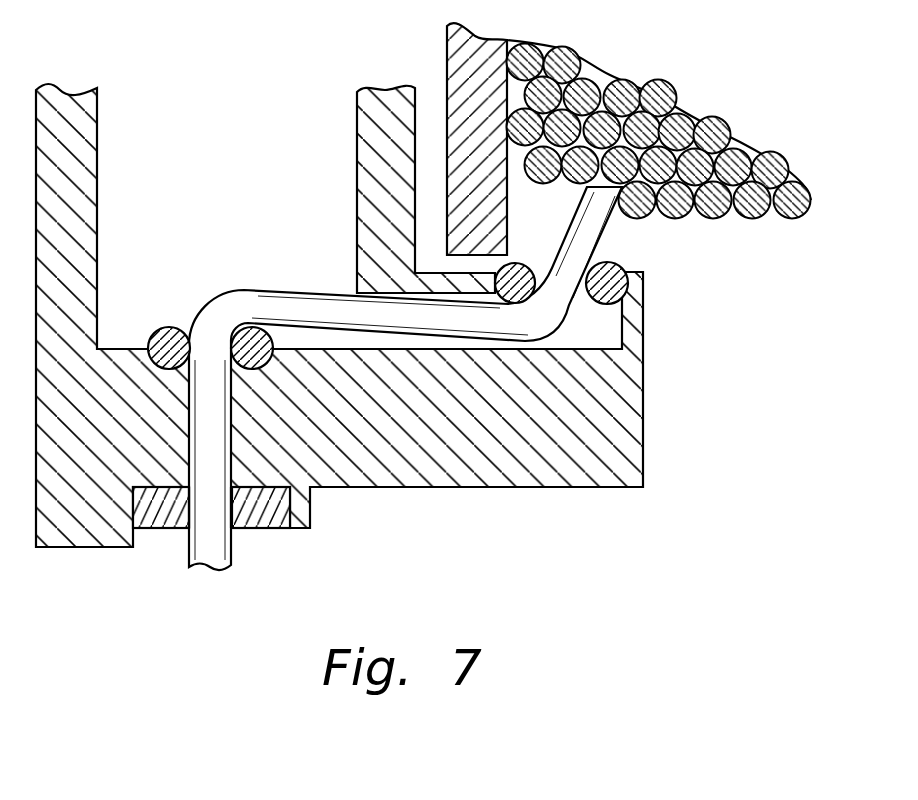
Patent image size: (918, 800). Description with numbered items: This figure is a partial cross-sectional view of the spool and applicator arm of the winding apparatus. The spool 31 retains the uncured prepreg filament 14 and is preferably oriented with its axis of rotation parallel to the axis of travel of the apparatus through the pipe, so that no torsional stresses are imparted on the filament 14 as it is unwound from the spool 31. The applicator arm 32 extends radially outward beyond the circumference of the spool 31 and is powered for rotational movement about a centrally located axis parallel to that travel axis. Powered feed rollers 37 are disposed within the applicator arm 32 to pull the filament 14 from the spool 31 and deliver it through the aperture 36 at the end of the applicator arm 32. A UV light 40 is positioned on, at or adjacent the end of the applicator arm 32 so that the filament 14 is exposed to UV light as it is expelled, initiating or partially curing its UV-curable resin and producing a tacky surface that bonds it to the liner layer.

The uncured prepreg filament 14 is at (723, 218).
The spool 31 is at (446, 53).
The applicator arm 32 is at (578, 487).
The aperture 36 is at (188, 532).
The powered feed rollers 37 is at (168, 327).
The UV light 40 is at (265, 530).